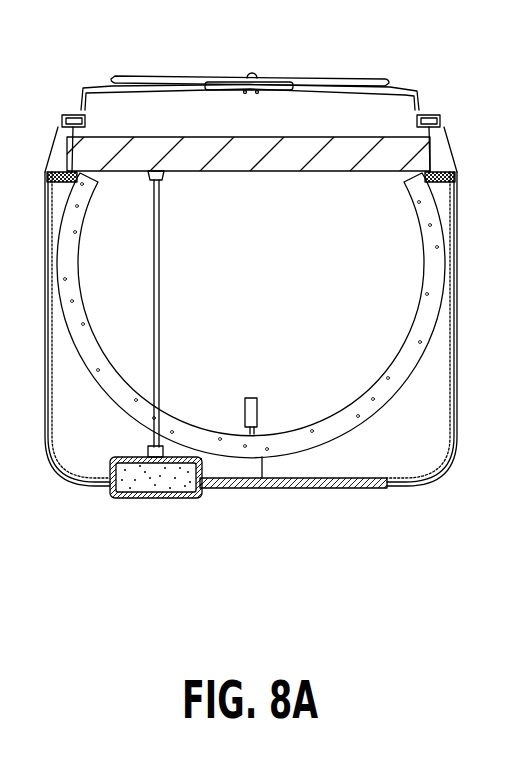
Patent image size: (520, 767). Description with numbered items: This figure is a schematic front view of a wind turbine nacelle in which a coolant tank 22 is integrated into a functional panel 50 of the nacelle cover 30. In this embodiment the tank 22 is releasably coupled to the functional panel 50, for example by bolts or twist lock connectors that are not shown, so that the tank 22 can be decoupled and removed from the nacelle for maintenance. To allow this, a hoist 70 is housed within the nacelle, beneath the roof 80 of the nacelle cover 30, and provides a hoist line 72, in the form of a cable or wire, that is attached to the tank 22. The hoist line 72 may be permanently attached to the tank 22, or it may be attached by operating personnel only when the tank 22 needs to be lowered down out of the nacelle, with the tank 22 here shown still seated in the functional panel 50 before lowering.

The tank 22 is at (125, 503).
The nacelle cover 30 is at (462, 428).
The functional panel 50 is at (319, 494).
The hoist 70 is at (150, 148).
The hoist line 72 is at (160, 267).
The roof 80 is at (341, 76).